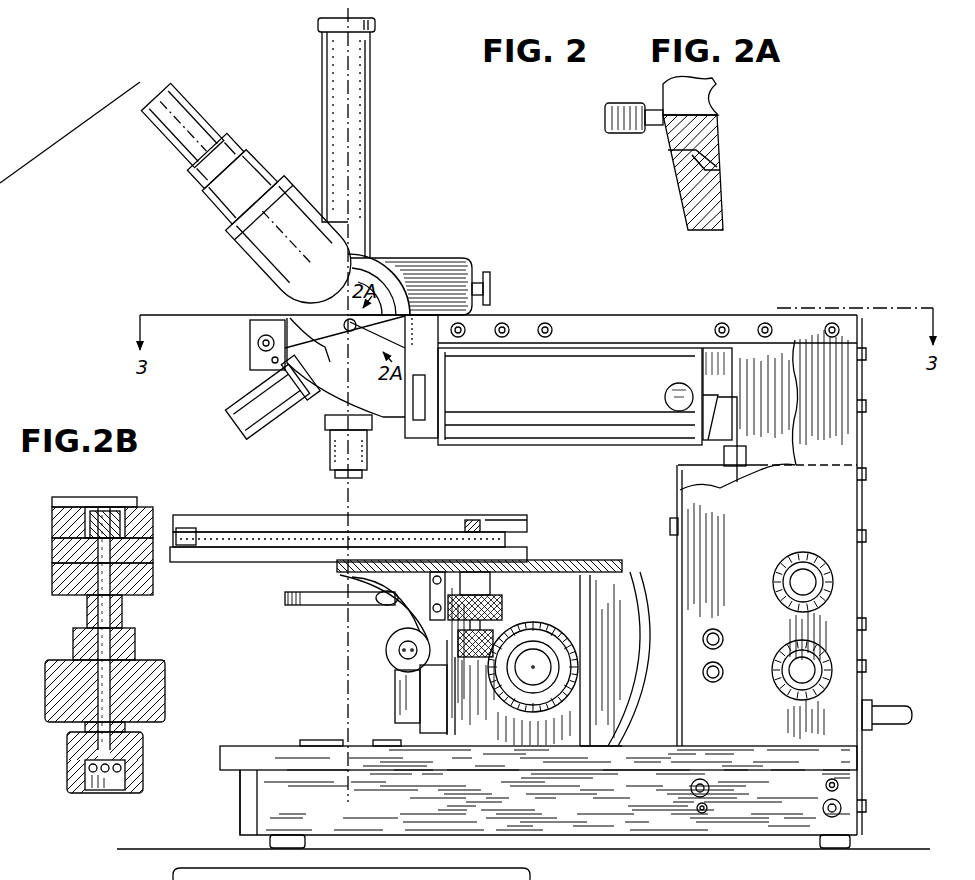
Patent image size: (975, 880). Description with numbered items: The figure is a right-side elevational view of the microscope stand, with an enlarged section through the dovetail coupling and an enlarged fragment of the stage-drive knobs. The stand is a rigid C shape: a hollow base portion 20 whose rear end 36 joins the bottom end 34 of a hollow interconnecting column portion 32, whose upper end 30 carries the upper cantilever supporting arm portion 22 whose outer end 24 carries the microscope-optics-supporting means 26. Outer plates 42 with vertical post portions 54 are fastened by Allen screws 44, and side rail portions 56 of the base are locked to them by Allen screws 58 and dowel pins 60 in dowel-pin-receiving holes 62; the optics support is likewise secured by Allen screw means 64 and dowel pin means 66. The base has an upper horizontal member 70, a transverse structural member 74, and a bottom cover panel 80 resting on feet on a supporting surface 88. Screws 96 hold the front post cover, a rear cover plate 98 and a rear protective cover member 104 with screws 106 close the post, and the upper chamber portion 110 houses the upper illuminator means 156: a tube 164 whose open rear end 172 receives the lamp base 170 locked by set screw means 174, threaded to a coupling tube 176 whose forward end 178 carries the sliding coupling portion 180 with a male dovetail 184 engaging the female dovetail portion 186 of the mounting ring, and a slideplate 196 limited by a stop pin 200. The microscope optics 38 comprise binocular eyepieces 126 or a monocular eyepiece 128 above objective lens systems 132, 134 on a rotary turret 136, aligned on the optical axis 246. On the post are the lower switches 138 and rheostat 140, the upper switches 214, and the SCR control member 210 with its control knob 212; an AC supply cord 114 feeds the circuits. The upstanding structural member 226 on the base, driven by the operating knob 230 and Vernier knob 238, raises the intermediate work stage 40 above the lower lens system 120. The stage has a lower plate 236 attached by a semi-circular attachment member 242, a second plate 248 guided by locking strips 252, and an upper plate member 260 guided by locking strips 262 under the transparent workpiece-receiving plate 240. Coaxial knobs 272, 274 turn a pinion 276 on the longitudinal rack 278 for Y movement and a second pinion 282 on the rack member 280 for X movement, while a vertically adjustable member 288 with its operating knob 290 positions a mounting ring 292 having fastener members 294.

In FIG. 2, the base portion 20 is at (220, 800).
In FIG. 2, the upper cantilever supporting arm portion 22 is at (622, 308).
In FIG. 2, the outer end 24 is at (222, 310).
In FIG. 2, the microscope-optics-supporting means 26 is at (270, 300).
In FIG. 2, the upper end 30 is at (832, 355).
In FIG. 2, the interconnecting column portion 32 is at (707, 612).
In FIG. 2, the bottom end 34 is at (785, 740).
In FIG. 2, the rear end 36 is at (865, 745).
In FIG. 2, the microscope optics 38 is at (242, 105).
In FIG. 2, the intermediate work stage 40 is at (205, 512).
In FIG. 2, the outer plates 42 is at (769, 501).
In FIG. 2, the Allen screws 44 is at (555, 325).
In FIG. 2, the vertical post portions 54 is at (826, 510).
In FIG. 2, the side rail portions 56 is at (548, 792).
In FIG. 2, the Allen screws 58 is at (830, 817).
In FIG. 2, the dowel pins 60 is at (838, 783).
In FIG. 2, the dowel-pin-receiving holes 62 is at (862, 800).
In FIG. 2, the Allen screw means 64 is at (255, 340).
In FIG. 2, the dowel pin and dowel pin receiving hole means 66 is at (250, 360).
In FIG. 2, the upper horizontal member 70 is at (538, 756).
In FIG. 2, the transverse structural member 74 is at (240, 820).
In FIG. 2, the protective bottom cover panel member 80 is at (360, 838).
In FIG. 2, the underlying horizontal supporting surface 88 is at (892, 845).
In FIG. 2, the screws 96 is at (660, 516).
In FIG. 2, the rear cover plate 98 is at (862, 478).
In FIG. 2, the rear protective cover member 104 is at (862, 388).
In FIG. 2, the screws 106 is at (863, 425).
In FIG. 2, the upper portion of the chamber 110 is at (770, 408).
In FIG. 2, the AC supply cord 114 is at (910, 718).
In FIG. 2, the lower lens system 120 is at (300, 736).
In FIG. 2, the binocular eyepieces 126 is at (143, 106).
In FIG. 2, the monocular eyepiece 128 is at (376, 22).
In FIG. 2, the objective lens system 132 is at (250, 438).
In FIG. 2, the objective lens system 134 is at (345, 470).
In FIG. 2, the rotary turret 136 is at (258, 380).
In FIG. 2, the lower illumination-controlling switch means 138 is at (727, 668).
In FIG. 2, the illumination intensity control member 140 is at (835, 662).
In FIG. 2, the upper illuminator means 156 is at (630, 365).
In FIG. 2, the tube 164 is at (520, 350).
In FIG. 2, the lamp base 170 is at (731, 372).
In FIG. 2, the open rear end 172 is at (737, 425).
In FIG. 2, the set screw means 174 is at (680, 390).
In FIG. 2, the coupling tube 176 is at (432, 262).
In FIG. 2, the forward end 178 is at (412, 440).
In FIG. 2, the coupling portion 180 is at (330, 385).
In FIG. 2A, the male dovetail 184 is at (717, 132).
In FIG. 2A, the female dovetail portion 186 is at (666, 172).
In FIG. 2, the slideplate 196 is at (440, 400).
In FIG. 2, the stop pin 200 is at (413, 400).
In FIG. 2, the illumination-intensity-control member 210 is at (840, 563).
In FIG. 2, the exterior control knob 212 is at (835, 585).
In FIG. 2, the upper illumination switch means 214 is at (726, 630).
In FIG. 2, the upstanding structural member 226 is at (595, 746).
In FIG. 2, the manual operating knob 230 is at (560, 652).
In FIG. 2, the lower plate 236 is at (222, 570).
In FIG. 2, the Vernier adjustment knob 238 is at (576, 660).
In FIG. 2, the transparent workpiece-receiving plate 240 is at (437, 500).
In FIG. 2, the semi-circular attachment member 242 is at (378, 600).
In FIG. 2, the optical axis 246 is at (348, 170).
In FIG. 2, the second plate 248 is at (268, 540).
In FIG. 2, the locking strip 252 is at (528, 552).
In FIG. 2B, the locking strip 252 is at (78, 595).
In FIG. 2, the upper plate member 260 is at (528, 520).
In FIG. 2, the locking strips 262 is at (185, 535).
In FIG. 2, the operating knob 272 is at (466, 670).
In FIG. 2B, the operating knob 272 is at (143, 752).
In FIG. 2, the knurled knob 274 is at (502, 600).
In FIG. 2B, the knurled knob 274 is at (167, 690).
In FIG. 2, the pinion 276 is at (472, 528).
In FIG. 2B, the pinion 276 is at (122, 608).
In FIG. 2, the longitudinal rack 278 is at (622, 560).
In FIG. 2, the longitudinal rack member 280 is at (510, 525).
In FIG. 2, the second pinion 282 is at (478, 520).
In FIG. 2B, the second pinion 282 is at (118, 507).
In FIG. 2, the vertically adjustable member 288 is at (396, 700).
In FIG. 2, the operating knob 290 is at (392, 660).
In FIG. 2, the mounting ring 292 is at (305, 604).
In FIG. 2, the fastener members 294 is at (388, 605).